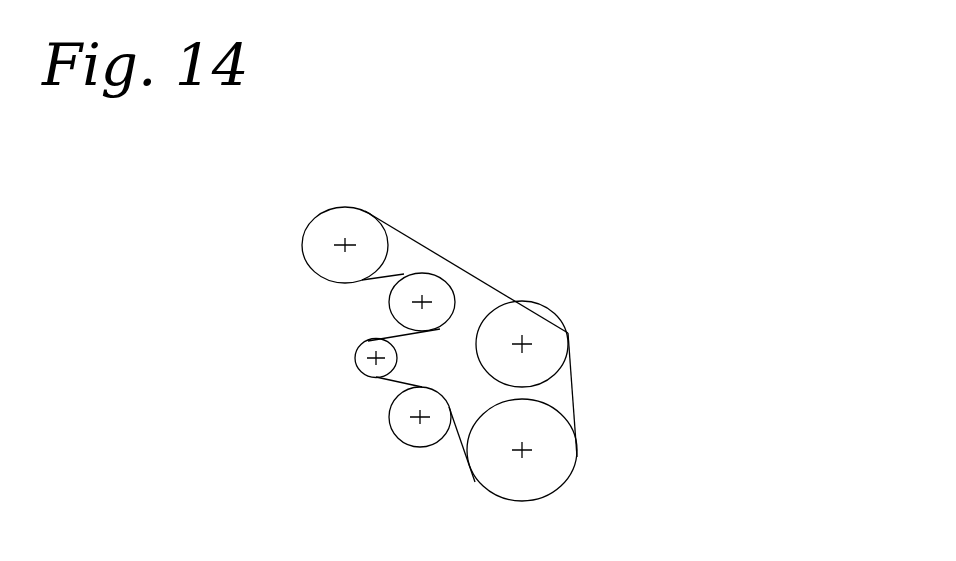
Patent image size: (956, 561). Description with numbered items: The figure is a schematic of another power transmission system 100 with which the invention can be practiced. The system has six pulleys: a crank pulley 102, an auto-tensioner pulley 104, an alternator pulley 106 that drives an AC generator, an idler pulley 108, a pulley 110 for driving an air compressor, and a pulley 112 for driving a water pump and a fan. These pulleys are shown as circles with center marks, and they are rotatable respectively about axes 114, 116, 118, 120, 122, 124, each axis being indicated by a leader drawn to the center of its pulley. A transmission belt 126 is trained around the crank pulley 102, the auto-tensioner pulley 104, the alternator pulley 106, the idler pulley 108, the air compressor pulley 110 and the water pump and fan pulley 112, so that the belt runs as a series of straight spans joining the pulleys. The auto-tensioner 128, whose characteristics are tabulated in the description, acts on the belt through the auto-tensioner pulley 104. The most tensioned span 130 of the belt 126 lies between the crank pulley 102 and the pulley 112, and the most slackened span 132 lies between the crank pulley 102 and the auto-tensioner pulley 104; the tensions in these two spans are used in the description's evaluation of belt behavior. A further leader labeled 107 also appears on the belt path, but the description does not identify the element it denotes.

The power transmission system 100 is at (569, 189).
The crank pulley 102 is at (564, 468).
The auto-tensioner pulley 104 is at (416, 436).
The alternator pulley 106 is at (372, 357).
The belt 107 is at (448, 256).
The idler pulley 108 is at (397, 303).
The pulley for driving an air compressor 110 is at (322, 228).
The pulley for driving a water pump and a fan 112 is at (556, 336).
The axis 114 is at (531, 450).
The axis 116 is at (410, 418).
The axis 118 is at (407, 350).
The axis 120 is at (422, 302).
The axis 122 is at (345, 245).
The axis 124 is at (525, 340).
The transmission belt 126 is at (573, 371).
The auto-tensioner 128 is at (453, 397).
The most tensioned span 130 is at (580, 403).
The most slackened span 132 is at (456, 450).